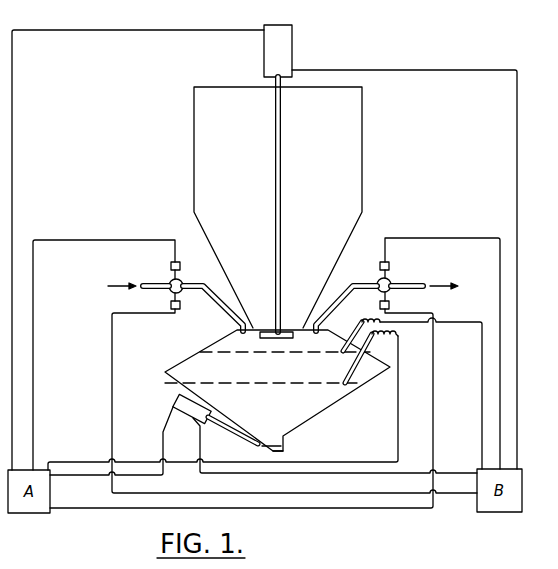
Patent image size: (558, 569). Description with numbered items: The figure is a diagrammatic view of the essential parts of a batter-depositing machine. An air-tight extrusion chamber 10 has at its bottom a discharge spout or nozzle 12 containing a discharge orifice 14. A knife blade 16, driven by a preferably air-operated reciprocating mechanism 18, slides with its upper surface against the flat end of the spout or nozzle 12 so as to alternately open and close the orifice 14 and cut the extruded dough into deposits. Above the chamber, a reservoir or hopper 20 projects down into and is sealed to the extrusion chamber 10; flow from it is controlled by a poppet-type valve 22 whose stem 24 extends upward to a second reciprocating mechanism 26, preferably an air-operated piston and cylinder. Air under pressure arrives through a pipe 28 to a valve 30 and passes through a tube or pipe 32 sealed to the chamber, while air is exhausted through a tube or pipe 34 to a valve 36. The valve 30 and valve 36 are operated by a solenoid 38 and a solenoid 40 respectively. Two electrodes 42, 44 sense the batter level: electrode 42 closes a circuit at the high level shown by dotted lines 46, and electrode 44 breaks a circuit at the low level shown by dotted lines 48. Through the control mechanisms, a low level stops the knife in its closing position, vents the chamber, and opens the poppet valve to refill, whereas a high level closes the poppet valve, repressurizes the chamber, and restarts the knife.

The extrusion chamber 10 is at (330, 403).
The discharge spout or nozzle 12 is at (284, 441).
The discharge orifice 14 is at (282, 450).
The knife blade 16 is at (248, 441).
The reciprocating mechanism 18 is at (178, 400).
The reservoir or hopper 20 is at (363, 138).
The valve 22 is at (294, 338).
The stem 24 is at (282, 196).
The reciprocating mechanism 26 is at (262, 50).
The pipe 28 is at (162, 283).
The valve 30 is at (172, 290).
The tube or pipe 32 is at (223, 305).
The tube or pipe 34 is at (336, 301).
The valve 36 is at (392, 281).
The solenoid 38 is at (179, 264).
The solenoid 40 is at (379, 266).
The electrode 42 is at (340, 350).
The electrode 44 is at (340, 382).
The dotted lines 46 is at (200, 352).
The dotted lines 48 is at (165, 382).